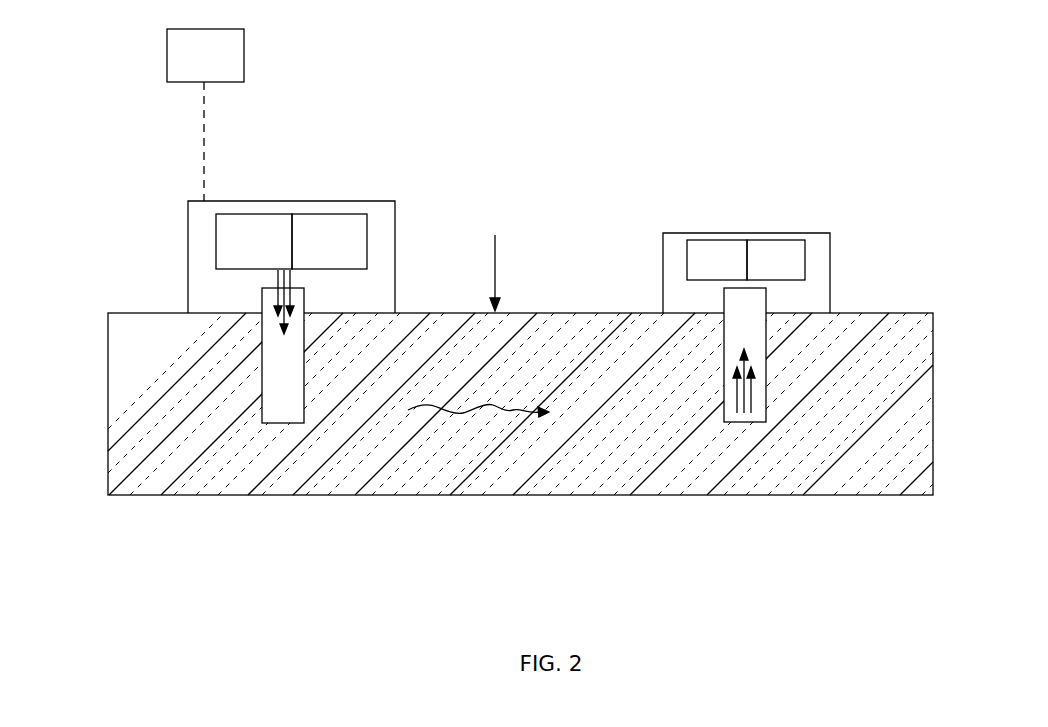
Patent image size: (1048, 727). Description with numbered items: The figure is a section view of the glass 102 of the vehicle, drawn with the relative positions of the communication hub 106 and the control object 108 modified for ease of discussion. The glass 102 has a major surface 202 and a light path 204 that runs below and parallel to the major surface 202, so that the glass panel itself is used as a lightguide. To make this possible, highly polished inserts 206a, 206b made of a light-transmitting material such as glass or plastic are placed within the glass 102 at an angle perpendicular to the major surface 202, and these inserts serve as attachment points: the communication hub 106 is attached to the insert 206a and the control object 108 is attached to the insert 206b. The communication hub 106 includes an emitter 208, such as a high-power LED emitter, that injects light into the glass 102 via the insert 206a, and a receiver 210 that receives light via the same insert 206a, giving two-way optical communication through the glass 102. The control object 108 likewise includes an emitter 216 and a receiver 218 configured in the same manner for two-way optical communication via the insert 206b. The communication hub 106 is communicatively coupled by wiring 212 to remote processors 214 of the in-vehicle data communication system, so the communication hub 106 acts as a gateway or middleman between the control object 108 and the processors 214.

The glass 102 is at (933, 395).
The communication hub 106 is at (188, 236).
The control object 108 is at (830, 272).
The major surface 202 is at (497, 272).
The light path 204 is at (463, 413).
The insert 206a is at (283, 423).
The insert 206b is at (745, 422).
The emitter 208 is at (277, 256).
The receiver 210 is at (352, 256).
The wiring 212 is at (202, 127).
The processors 214 is at (228, 68).
The emitter 216 is at (738, 271).
The receiver 218 is at (798, 271).